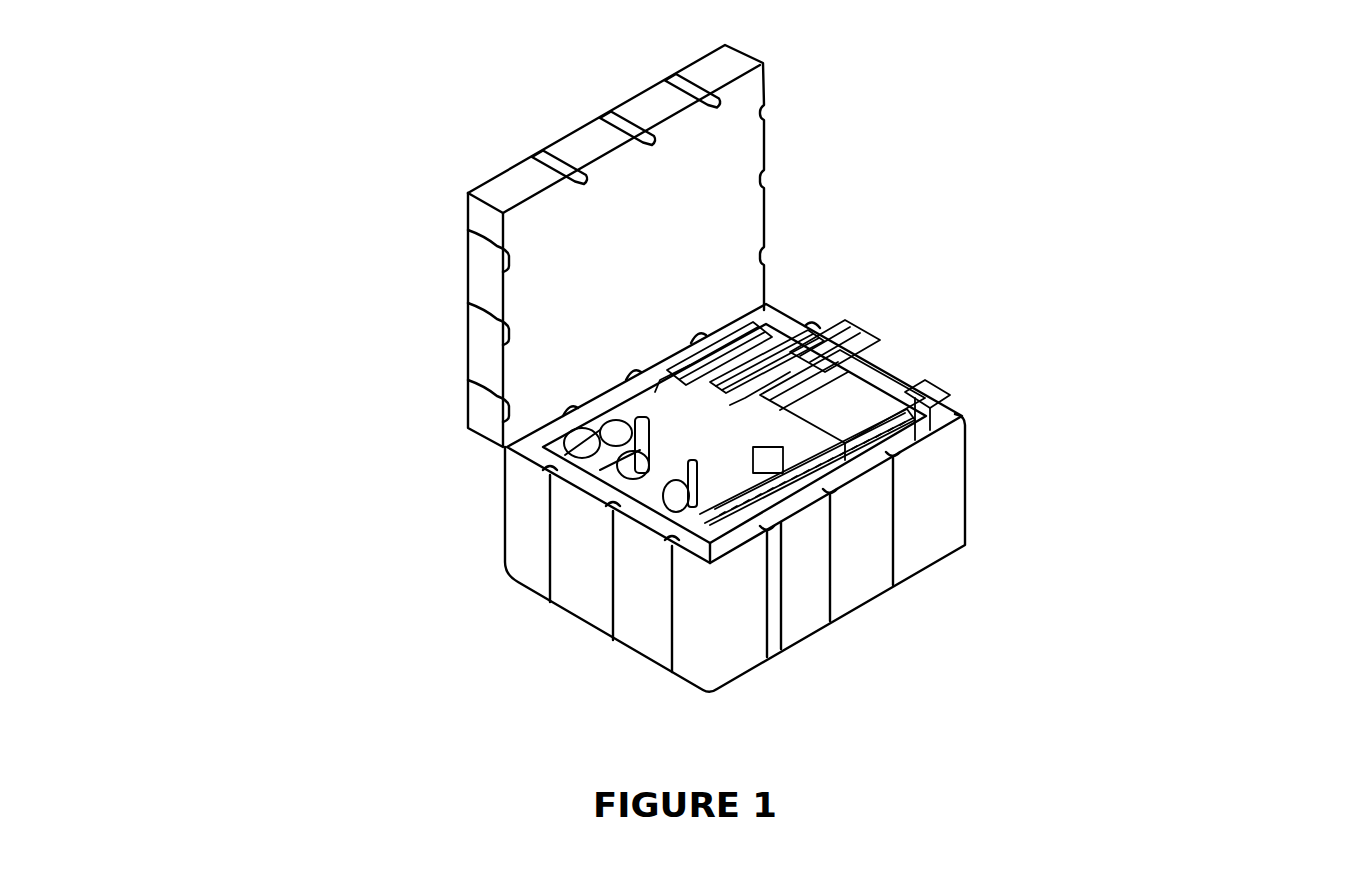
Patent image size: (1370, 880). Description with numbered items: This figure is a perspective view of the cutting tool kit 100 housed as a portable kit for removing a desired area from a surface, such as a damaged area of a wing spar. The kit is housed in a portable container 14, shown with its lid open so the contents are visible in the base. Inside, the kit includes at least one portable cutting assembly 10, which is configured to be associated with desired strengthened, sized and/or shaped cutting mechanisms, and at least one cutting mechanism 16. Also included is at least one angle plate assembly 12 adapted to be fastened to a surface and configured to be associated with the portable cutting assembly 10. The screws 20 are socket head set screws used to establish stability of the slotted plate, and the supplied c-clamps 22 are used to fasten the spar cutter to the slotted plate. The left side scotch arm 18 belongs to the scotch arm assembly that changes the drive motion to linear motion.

The cutting tool kit 100 is at (472, 130).
The portable container 14 is at (497, 553).
The portable cutting assembly 10 is at (575, 459).
The c-clamps 22 is at (767, 310).
The screws 20 is at (818, 337).
The scotch arm assembly 18 is at (853, 358).
The cutting mechanism 16 is at (922, 403).
The angle plate assembly 12 is at (847, 481).